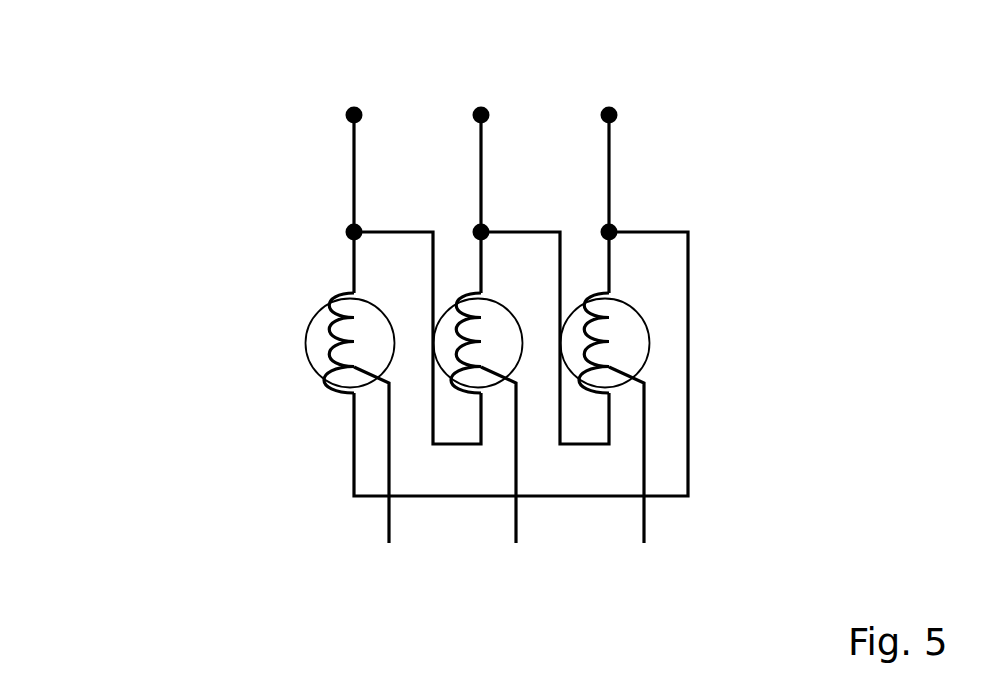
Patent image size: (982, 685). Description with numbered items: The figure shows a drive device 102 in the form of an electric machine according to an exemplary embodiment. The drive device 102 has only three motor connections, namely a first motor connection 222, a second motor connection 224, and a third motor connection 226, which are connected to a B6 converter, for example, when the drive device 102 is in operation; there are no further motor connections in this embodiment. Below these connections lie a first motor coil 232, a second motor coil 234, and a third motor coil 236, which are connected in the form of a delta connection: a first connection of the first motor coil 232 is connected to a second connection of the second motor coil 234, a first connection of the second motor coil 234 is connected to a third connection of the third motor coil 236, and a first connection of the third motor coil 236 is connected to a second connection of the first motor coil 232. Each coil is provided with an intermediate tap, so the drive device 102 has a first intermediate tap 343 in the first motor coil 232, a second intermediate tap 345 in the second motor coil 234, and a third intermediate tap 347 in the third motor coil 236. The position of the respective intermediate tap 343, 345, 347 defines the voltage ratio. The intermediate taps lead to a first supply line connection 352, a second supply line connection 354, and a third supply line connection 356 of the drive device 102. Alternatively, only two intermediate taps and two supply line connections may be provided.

The drive device 102 is at (762, 129).
The first motor connection 222 is at (351, 109).
The second motor connection 224 is at (474, 111).
The third motor connection 226 is at (601, 112).
The first motor coil 232 is at (357, 330).
The second motor coil 234 is at (492, 340).
The third motor coil 236 is at (618, 337).
The first intermediate tap 343 is at (383, 375).
The second intermediate tap 345 is at (504, 382).
The third intermediate tap 347 is at (643, 384).
The first supply line connection 352 is at (389, 527).
The second supply line connection 354 is at (517, 527).
The third supply line connection 356 is at (643, 527).